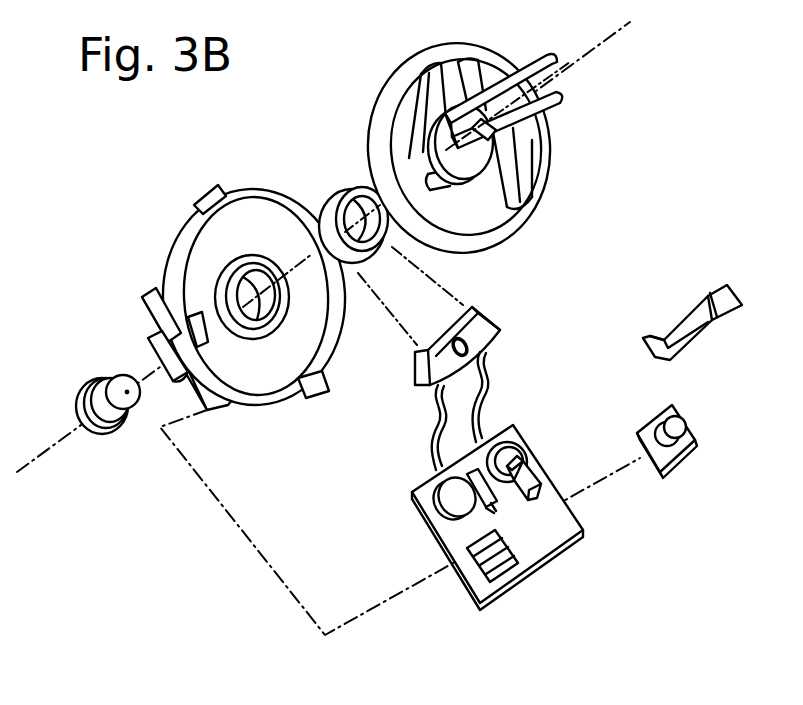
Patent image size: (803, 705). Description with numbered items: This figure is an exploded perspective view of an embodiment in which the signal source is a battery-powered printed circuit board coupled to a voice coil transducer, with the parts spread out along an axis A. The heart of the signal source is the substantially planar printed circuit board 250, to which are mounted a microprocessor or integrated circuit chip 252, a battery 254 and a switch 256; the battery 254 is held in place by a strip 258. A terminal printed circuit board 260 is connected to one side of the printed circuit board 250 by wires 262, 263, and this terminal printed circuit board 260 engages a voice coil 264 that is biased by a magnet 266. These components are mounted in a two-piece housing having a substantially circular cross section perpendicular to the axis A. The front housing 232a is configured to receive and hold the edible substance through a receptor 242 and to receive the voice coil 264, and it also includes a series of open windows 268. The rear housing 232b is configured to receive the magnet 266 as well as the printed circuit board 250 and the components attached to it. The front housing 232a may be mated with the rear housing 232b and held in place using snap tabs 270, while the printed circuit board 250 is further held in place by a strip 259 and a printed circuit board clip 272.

The axis A is at (608, 38).
The front housing 232a is at (444, 139).
The rear housing 232b is at (182, 228).
The receptor 242 is at (558, 110).
The printed circuit board 250 is at (550, 556).
The integrated circuit chip 252 is at (425, 478).
The battery 254 is at (512, 452).
The switch 256 is at (680, 458).
The strip 258 is at (543, 487).
The strip 259 is at (684, 316).
The terminal printed circuit board 260 is at (497, 317).
The wire 262 is at (432, 440).
The wire 263 is at (500, 393).
The voice coil 264 is at (336, 196).
The magnet 266 is at (108, 432).
The open windows 268 is at (477, 205).
The snap tabs 270 is at (221, 186).
The printed circuit board clip 272 is at (155, 358).